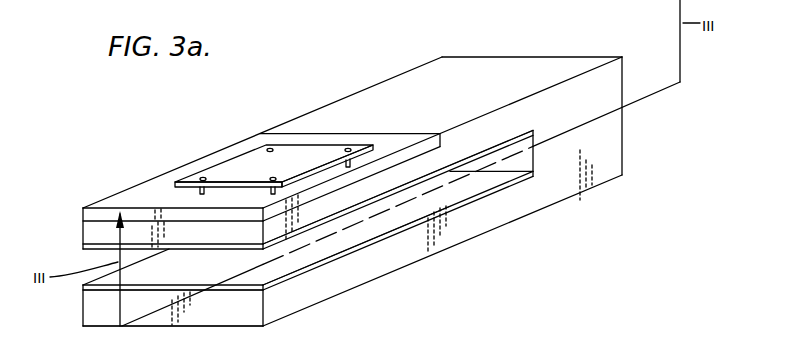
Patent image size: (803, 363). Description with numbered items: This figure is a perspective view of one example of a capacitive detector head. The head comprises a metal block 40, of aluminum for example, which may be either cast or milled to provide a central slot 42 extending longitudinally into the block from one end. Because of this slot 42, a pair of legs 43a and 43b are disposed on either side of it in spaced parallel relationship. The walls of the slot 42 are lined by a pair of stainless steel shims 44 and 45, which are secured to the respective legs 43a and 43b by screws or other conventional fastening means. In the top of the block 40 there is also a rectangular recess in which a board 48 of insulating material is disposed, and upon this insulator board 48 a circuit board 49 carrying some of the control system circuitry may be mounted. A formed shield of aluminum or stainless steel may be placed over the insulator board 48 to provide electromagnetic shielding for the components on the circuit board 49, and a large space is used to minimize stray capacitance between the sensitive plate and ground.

The metal block 40 is at (530, 67).
The central slot 42 is at (350, 235).
The leg 43a is at (85, 233).
The leg 43b is at (88, 313).
The stainless steel shim 44 is at (534, 131).
The stainless steel shim 45 is at (535, 174).
The insulating board 48 is at (143, 180).
The circuit board 49 is at (245, 163).